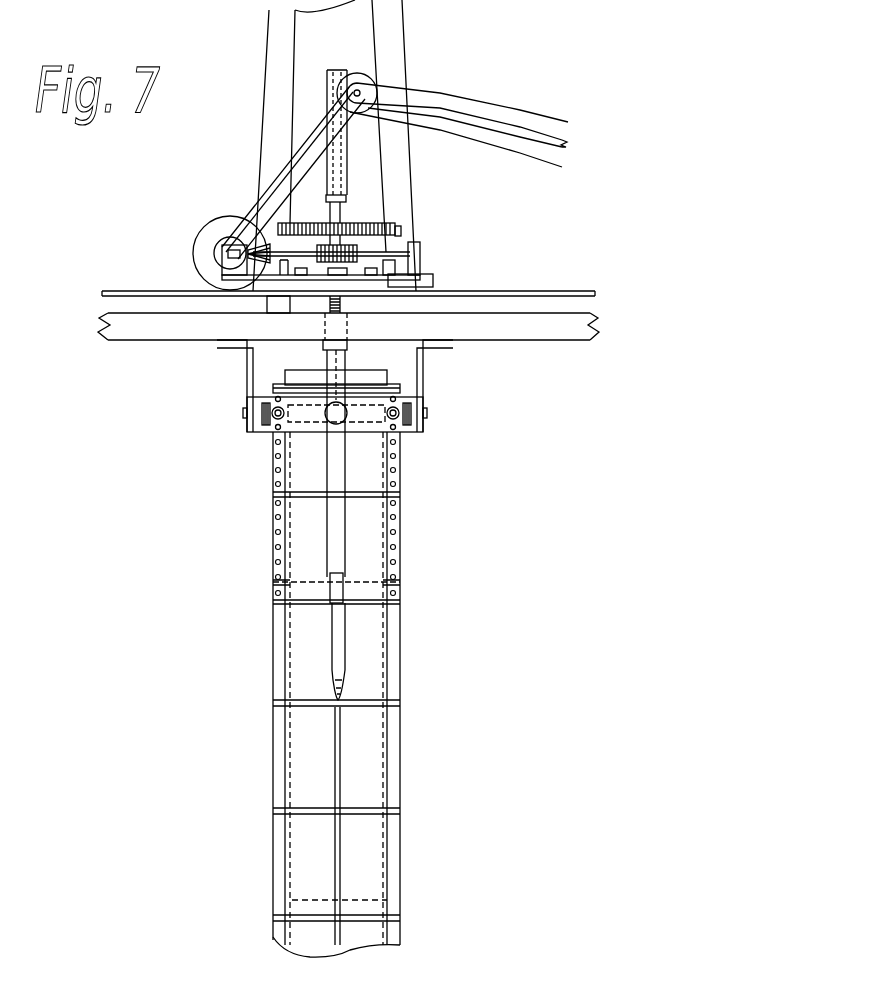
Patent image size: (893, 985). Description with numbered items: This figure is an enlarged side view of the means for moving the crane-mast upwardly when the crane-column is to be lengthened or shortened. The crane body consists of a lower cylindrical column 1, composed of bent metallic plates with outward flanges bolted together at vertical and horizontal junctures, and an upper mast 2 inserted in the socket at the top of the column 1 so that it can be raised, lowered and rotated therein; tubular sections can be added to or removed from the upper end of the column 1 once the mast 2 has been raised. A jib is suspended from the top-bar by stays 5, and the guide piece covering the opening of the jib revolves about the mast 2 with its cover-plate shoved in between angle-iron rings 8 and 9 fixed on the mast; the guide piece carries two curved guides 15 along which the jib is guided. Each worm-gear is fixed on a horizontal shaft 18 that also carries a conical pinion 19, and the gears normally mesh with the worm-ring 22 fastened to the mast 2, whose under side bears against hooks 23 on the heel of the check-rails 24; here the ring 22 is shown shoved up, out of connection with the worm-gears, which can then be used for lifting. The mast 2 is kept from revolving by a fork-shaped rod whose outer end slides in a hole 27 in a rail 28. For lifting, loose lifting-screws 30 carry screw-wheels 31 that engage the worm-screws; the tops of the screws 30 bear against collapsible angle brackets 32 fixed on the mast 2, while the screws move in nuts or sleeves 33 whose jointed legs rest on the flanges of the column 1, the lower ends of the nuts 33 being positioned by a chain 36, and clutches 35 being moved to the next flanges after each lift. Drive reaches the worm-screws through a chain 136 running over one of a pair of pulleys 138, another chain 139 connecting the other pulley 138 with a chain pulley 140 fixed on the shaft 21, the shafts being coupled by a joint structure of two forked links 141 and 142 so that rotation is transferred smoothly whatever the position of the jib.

The column 1 is at (281, 766).
The mast 2 is at (367, 361).
The stays 5 is at (266, 46).
The angle-iron ring 8 is at (395, 275).
The angle-iron ring 9 is at (400, 290).
The guides 15 is at (357, 284).
The horizontal shaft 18 is at (371, 252).
The conical pinion 19 is at (262, 264).
The shaft 21 is at (220, 258).
The worm-ring 22 is at (350, 220).
The hooks 23 is at (400, 271).
The check-rails 24 is at (397, 234).
The hole 27 is at (330, 416).
The rail 28 is at (366, 420).
The lifting-screws 30 is at (330, 510).
The screw-wheels 31 is at (322, 262).
The angle bracket 32 is at (340, 143).
The nuts or sleeves 33 is at (332, 327).
The clutches 35 is at (333, 685).
The chain 36 is at (353, 590).
The chain 136 is at (470, 140).
The pulleys 138 is at (366, 85).
The chain 139 is at (274, 168).
The chain pulley 140 is at (222, 240).
The forked link 141 is at (498, 127).
The forked link 142 is at (318, 143).